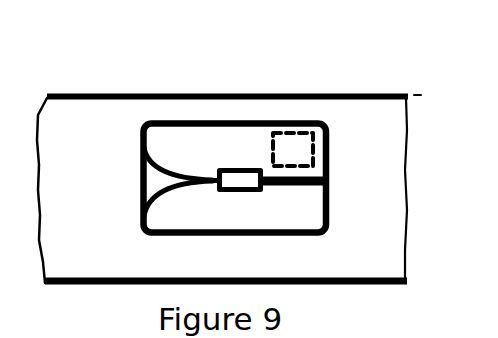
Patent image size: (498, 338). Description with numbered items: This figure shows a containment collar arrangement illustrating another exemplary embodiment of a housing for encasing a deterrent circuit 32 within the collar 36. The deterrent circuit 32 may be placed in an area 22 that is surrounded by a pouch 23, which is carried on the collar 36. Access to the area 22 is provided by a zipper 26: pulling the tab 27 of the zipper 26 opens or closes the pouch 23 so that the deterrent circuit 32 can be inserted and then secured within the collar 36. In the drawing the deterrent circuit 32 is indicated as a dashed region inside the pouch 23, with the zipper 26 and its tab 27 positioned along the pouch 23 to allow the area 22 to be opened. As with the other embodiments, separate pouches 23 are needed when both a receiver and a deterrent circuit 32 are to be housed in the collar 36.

The collar 36 is at (88, 107).
The pouch 23 is at (308, 219).
The area 22 is at (152, 178).
The zipper 26 is at (177, 170).
The tab 27 is at (252, 183).
The deterrent circuit 32 is at (300, 161).